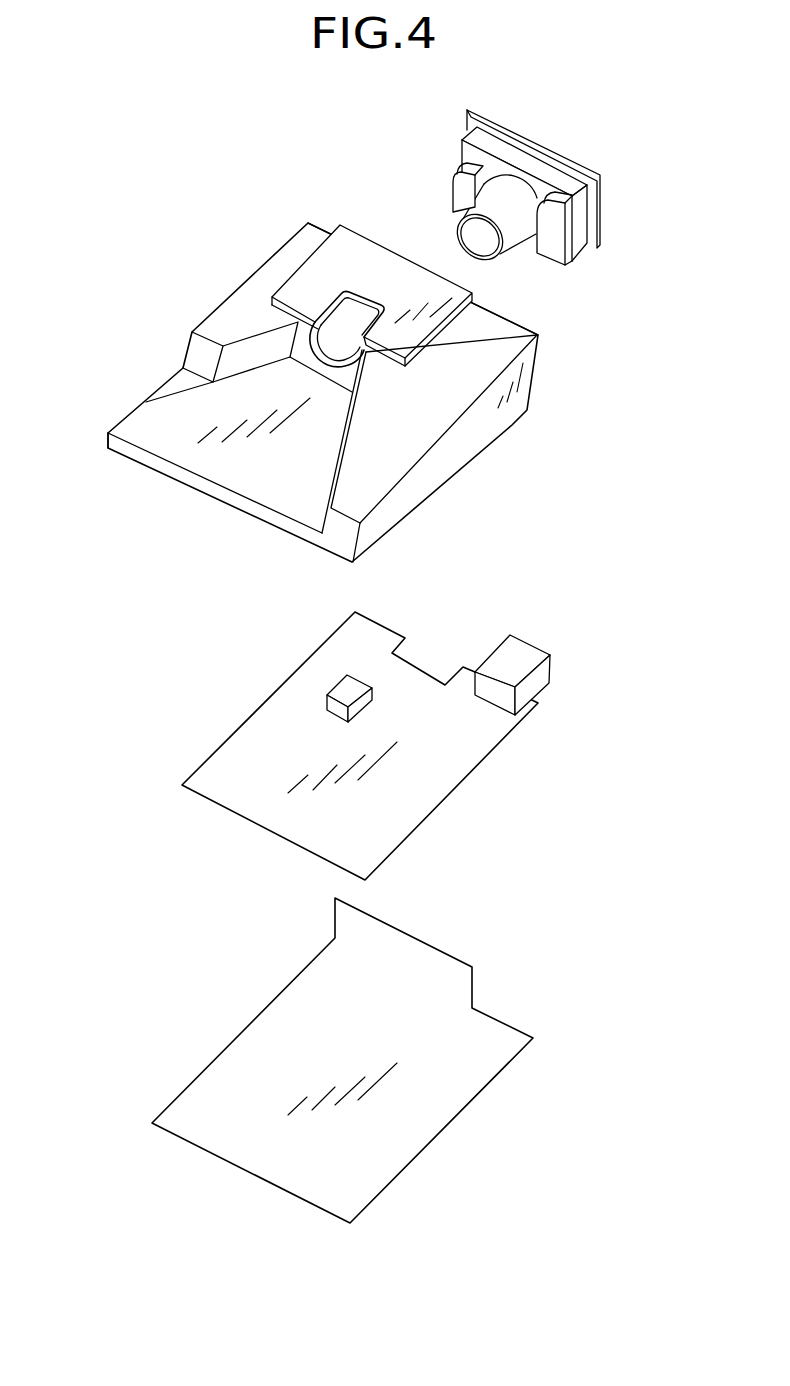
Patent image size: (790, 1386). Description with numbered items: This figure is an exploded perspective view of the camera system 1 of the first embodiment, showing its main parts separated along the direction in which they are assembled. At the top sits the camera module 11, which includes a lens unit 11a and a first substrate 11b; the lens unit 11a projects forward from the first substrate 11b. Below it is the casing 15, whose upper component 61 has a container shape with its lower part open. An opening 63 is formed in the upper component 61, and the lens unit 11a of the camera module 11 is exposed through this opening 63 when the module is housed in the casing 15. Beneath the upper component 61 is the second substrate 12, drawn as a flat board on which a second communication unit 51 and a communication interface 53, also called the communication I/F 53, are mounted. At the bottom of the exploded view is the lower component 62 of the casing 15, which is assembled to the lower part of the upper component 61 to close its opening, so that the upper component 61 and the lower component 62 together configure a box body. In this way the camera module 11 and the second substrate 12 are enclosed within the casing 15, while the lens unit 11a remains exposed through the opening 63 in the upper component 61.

The camera system 1 is at (317, 369).
The camera module 11 is at (540, 176).
The lens unit 11a is at (457, 227).
The first substrate 11b is at (603, 197).
The second substrate 12 is at (405, 746).
The casing 15 is at (453, 447).
The second communication unit 51 is at (343, 690).
The communication interface 53 is at (548, 672).
The upper component 61 is at (248, 313).
The lower component 62 is at (502, 1042).
The opening 63 is at (345, 355).